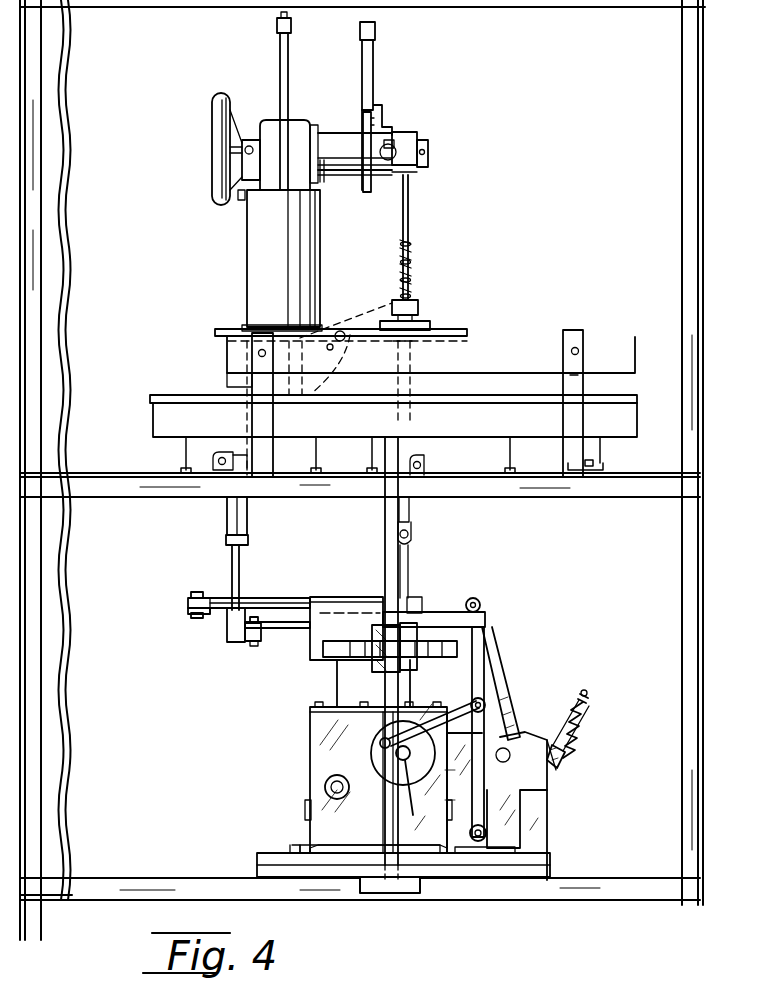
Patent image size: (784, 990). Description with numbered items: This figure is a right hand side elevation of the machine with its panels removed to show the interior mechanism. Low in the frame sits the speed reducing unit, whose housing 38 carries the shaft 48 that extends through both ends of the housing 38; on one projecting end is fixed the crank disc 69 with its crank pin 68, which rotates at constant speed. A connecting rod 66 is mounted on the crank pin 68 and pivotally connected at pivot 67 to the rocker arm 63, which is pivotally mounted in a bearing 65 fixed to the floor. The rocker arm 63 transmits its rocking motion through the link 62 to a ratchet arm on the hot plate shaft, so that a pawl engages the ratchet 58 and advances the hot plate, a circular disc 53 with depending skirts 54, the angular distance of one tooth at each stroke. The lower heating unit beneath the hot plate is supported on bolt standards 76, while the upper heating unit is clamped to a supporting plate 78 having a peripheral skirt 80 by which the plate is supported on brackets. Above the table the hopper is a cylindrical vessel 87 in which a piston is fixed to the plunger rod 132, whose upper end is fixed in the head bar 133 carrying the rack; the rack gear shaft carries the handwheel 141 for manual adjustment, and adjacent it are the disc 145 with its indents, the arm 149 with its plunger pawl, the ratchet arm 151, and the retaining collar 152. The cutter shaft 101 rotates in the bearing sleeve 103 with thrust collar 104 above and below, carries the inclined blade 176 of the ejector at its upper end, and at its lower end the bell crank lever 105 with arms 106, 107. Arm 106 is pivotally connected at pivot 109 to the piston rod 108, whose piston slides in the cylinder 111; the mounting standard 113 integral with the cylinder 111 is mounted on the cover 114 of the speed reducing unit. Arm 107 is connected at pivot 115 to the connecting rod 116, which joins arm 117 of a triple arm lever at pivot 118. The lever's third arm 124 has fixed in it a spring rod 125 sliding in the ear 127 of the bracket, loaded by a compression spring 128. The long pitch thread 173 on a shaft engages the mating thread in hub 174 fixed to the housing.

The housing 38 is at (384, 753).
The shaft 48 is at (413, 794).
The circular disc 53 is at (172, 394).
The depending skirts 54 is at (395, 420).
The ratchet 58 is at (488, 648).
The link 62 is at (437, 620).
The rocker arm 63 is at (520, 808).
The bearing 65 is at (515, 842).
The connecting rod 66 is at (495, 712).
The pivot 67 is at (485, 700).
The crank pin 68 is at (383, 741).
The crank disc 69 is at (372, 762).
The bolt standards 76 is at (180, 449).
The supporting plate 78 is at (520, 337).
The peripheral skirt 80 is at (431, 378).
The cylindrical vessel 87 is at (263, 250).
The shaft 101 is at (242, 562).
The bearing sleeve 103 is at (227, 513).
The thrust collar 104 is at (226, 538).
The bell crank lever 105 is at (227, 630).
The arm 106 is at (251, 645).
The arm 107 is at (190, 603).
The piston rod 108 is at (292, 630).
The pivot 109 is at (252, 618).
The cylinder 111 is at (352, 596).
The mounting standard 113 is at (390, 674).
The cover 114 is at (310, 708).
The pivot 115 is at (190, 595).
The connecting rod 116 is at (292, 599).
The arm 117 is at (490, 636).
The pivot 118 is at (483, 601).
The third arm 124 is at (552, 778).
The spring rod 125 is at (584, 695).
The ear 127 is at (563, 757).
The compression spring 128 is at (586, 723).
The plunger rod 132 is at (280, 62).
The head bar 133 is at (277, 25).
The handwheel 141 is at (212, 172).
The disc 145 is at (350, 190).
The arm 149 is at (373, 70).
The ratchet arm 151 is at (398, 143).
The retaining collar 152 is at (420, 163).
The long pitch thread 173 is at (407, 273).
The hub 174 is at (417, 303).
The inclined blade 176 is at (228, 382).